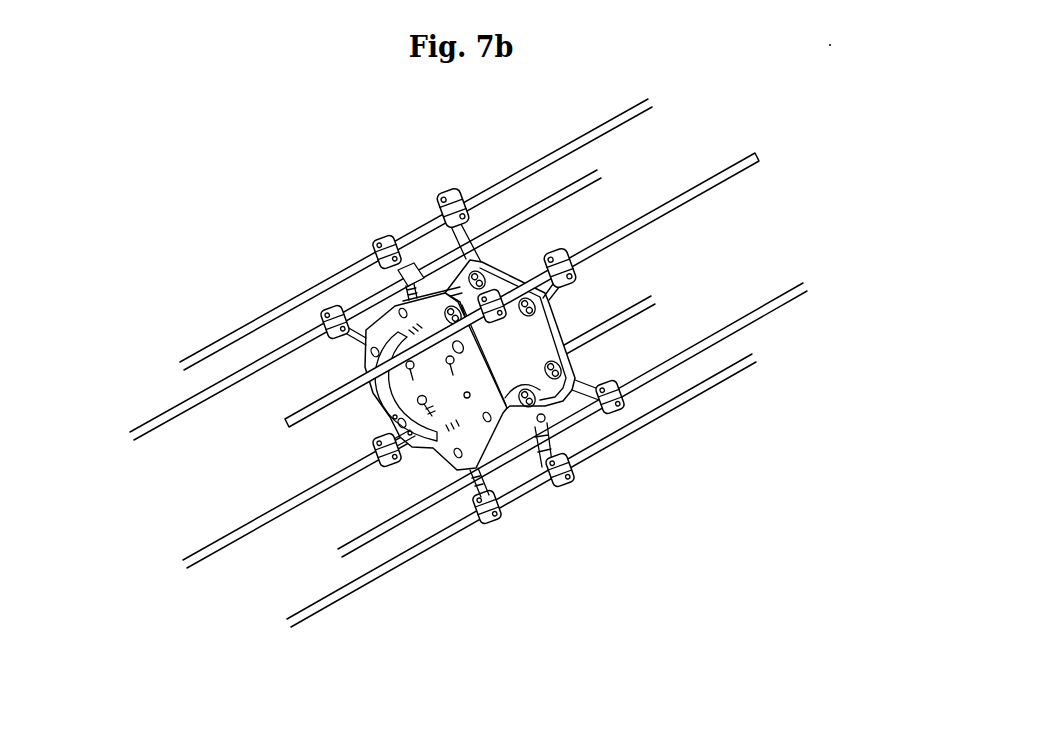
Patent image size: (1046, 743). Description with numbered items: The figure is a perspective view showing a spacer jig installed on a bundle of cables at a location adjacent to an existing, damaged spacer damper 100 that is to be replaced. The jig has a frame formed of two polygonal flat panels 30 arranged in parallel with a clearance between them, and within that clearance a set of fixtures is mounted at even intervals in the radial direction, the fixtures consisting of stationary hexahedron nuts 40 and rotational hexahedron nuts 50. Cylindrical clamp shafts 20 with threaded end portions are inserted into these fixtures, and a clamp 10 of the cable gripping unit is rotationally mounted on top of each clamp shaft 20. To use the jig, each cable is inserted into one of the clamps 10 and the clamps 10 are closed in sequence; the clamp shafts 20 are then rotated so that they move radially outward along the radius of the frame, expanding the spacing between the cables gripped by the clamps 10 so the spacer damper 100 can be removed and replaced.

The spacer damper 100 is at (460, 287).
The clamp 10 is at (387, 260).
The clamp shaft 20 is at (385, 283).
The flat panel 30 is at (387, 398).
The stationary hexahedron nut 40 is at (553, 408).
The rotational hexahedron nut 50 is at (427, 437).